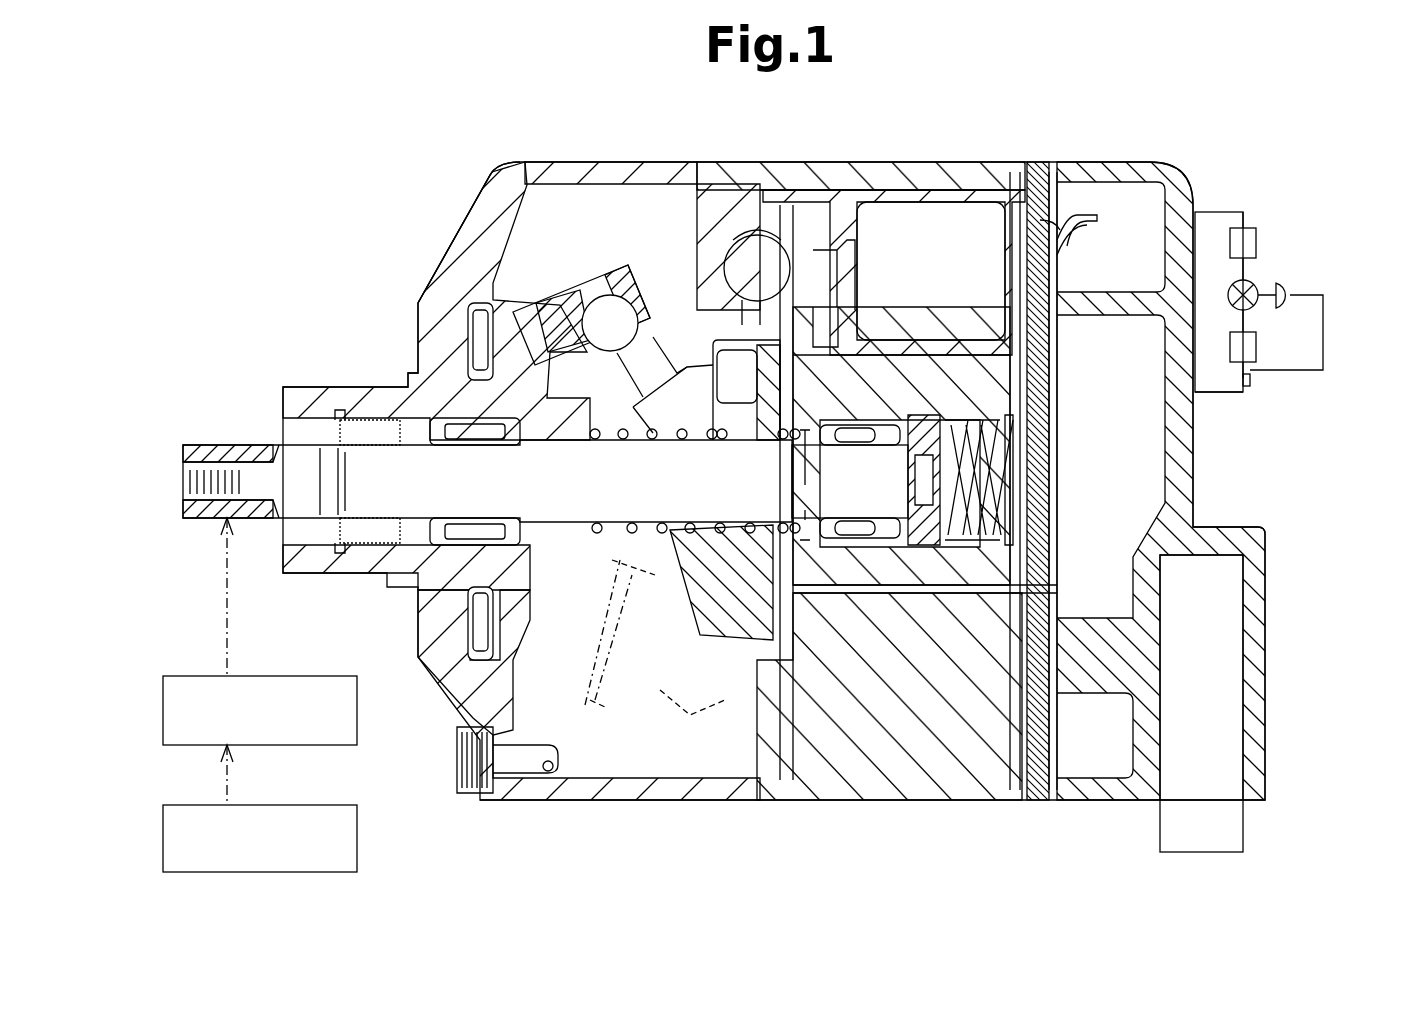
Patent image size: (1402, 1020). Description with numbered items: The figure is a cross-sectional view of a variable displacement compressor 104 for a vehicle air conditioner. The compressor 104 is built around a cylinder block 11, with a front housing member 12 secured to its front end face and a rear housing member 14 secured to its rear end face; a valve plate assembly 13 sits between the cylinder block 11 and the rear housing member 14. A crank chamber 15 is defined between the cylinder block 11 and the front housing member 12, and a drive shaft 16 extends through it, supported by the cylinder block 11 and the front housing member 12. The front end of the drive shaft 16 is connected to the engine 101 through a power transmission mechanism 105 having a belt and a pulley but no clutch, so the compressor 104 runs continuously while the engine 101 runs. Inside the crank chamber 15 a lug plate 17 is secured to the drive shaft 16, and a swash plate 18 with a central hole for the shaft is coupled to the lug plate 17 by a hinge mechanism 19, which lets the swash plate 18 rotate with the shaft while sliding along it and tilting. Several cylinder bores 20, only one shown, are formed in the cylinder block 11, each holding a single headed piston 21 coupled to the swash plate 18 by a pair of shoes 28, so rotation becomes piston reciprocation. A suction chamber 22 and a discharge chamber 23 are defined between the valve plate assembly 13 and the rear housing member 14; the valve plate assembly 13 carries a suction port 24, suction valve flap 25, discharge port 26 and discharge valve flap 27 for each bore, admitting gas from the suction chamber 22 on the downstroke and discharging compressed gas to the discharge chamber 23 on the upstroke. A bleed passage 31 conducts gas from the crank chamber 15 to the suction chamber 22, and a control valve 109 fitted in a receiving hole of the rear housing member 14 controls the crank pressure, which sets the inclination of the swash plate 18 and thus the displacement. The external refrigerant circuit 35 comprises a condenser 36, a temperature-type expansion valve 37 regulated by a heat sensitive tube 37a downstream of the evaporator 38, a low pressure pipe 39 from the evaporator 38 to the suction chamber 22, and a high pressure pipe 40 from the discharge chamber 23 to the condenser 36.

The cylinder block 11 is at (838, 802).
The front housing member 12 is at (598, 802).
The valve plate assembly 13 is at (1038, 802).
The rear housing member 14 is at (1268, 600).
The crank chamber 15 is at (602, 773).
The drive shaft 16 is at (655, 520).
The lug plate 17 is at (525, 668).
The swash plate 18 is at (655, 700).
The hinge mechanism 19 is at (576, 274).
The cylinder bore 20 is at (920, 190).
The single headed piston 21 is at (885, 185).
The suction chamber 22 is at (1100, 455).
The discharge chamber 23 is at (1100, 285).
The suction port 24 is at (1020, 348).
The suction valve flap 25 is at (1030, 330).
The discharge port 26 is at (1040, 232).
The discharge valve flap 27 is at (1070, 212).
The shoes 28 is at (785, 235).
The bleed passage 31 is at (1040, 590).
The external refrigerant circuit 35 is at (1292, 252).
The condenser 36 is at (1245, 228).
The temperature-type expansion valve 37 is at (1235, 277).
The heat sensitive tube 37a is at (1250, 386).
The evaporator 38 is at (1257, 347).
The low pressure pipe 39 is at (1212, 393).
The high pressure pipe 40 is at (1222, 210).
The engine 101 is at (357, 838).
The compressor 104 is at (486, 165).
The power transmission mechanism 105 is at (357, 705).
The control valve 109 is at (1218, 852).